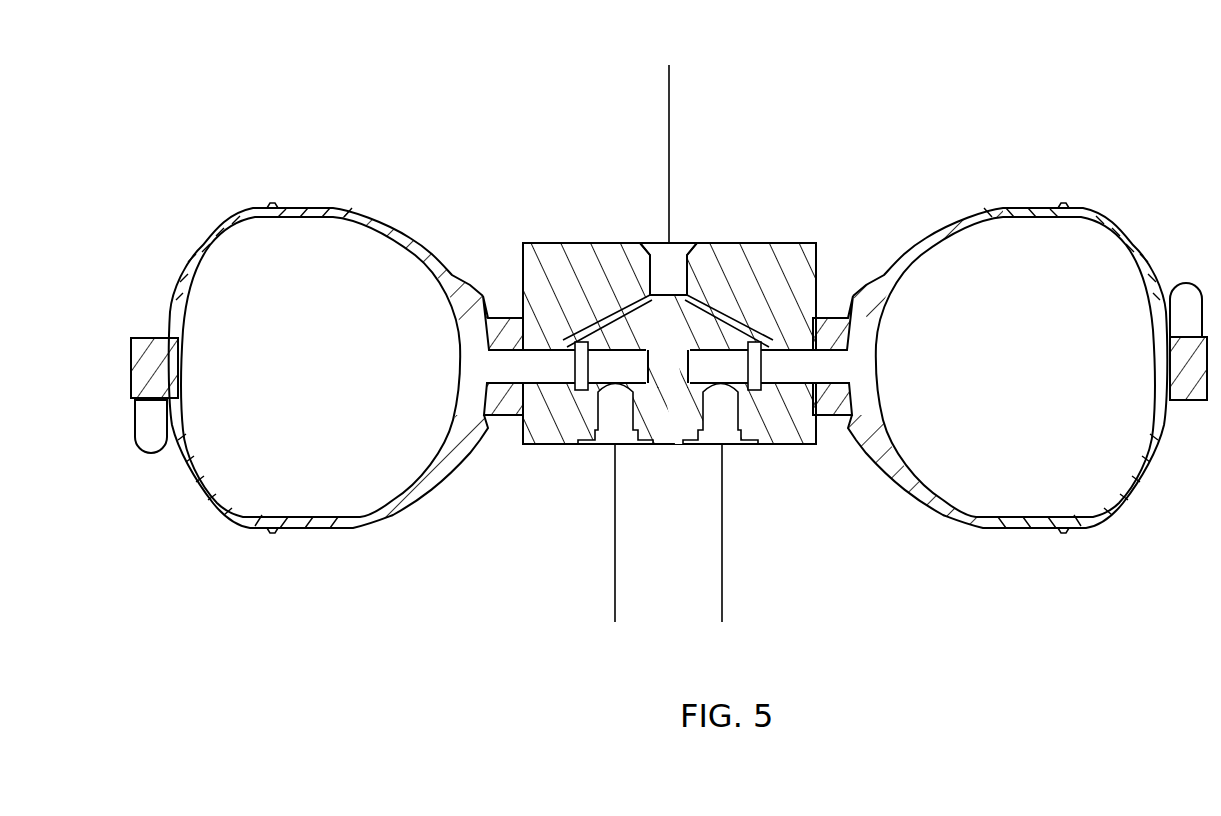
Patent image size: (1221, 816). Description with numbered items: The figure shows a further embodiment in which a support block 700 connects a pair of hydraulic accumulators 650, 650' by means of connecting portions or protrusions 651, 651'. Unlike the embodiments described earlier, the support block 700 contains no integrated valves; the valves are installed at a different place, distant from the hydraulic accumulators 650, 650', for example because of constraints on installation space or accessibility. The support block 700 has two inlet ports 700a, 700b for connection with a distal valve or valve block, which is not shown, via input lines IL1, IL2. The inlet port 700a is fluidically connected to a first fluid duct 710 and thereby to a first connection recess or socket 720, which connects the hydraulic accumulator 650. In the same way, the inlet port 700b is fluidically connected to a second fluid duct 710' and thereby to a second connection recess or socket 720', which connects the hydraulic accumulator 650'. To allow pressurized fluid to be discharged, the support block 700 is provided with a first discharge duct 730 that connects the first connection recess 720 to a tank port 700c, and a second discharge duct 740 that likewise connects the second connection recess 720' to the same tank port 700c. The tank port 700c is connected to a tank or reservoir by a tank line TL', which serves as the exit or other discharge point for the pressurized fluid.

The hydraulic accumulator 650 is at (328, 340).
The hydraulic accumulator 650' is at (1007, 340).
The connecting portion 651 is at (495, 323).
The connecting portion 651' is at (844, 325).
The support block 700 is at (667, 365).
The inlet port 700a is at (618, 445).
The inlet port 700b is at (723, 445).
The tank port 700c is at (666, 241).
The first fluid duct 710 is at (590, 465).
The second fluid duct 710' is at (773, 483).
The first connection recess 720 is at (529, 429).
The second connection recess 720' is at (800, 425).
The first discharge duct 730 is at (540, 243).
The second discharge duct 740 is at (787, 330).
The tank line TL' is at (633, 141).
The input line IL1 is at (614, 575).
The input line IL2 is at (721, 575).